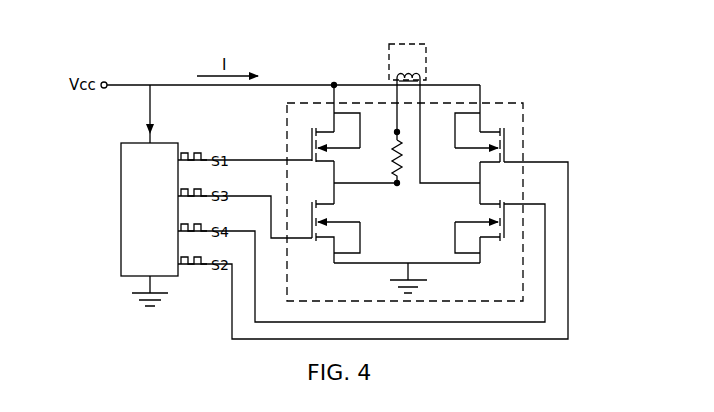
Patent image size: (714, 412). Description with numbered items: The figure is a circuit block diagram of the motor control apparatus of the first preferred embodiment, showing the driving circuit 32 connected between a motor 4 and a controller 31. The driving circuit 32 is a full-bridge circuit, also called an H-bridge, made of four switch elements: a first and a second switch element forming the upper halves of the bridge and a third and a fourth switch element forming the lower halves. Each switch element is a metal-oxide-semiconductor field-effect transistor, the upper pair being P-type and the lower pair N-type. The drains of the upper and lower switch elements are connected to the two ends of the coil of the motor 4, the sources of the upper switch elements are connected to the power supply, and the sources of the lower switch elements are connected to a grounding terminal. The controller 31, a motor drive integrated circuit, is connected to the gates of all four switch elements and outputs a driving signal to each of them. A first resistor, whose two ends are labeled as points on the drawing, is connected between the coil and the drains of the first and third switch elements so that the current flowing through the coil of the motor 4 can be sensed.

The controller 31 is at (121, 210).
The driving circuit 32 is at (508, 103).
The motor 4 is at (427, 62).